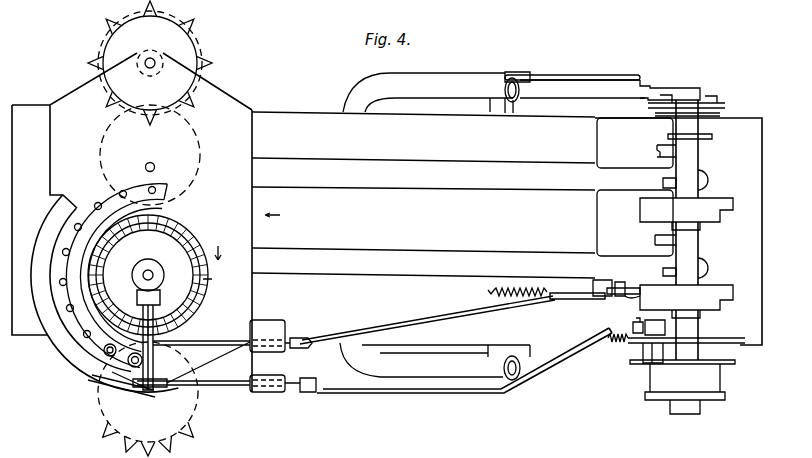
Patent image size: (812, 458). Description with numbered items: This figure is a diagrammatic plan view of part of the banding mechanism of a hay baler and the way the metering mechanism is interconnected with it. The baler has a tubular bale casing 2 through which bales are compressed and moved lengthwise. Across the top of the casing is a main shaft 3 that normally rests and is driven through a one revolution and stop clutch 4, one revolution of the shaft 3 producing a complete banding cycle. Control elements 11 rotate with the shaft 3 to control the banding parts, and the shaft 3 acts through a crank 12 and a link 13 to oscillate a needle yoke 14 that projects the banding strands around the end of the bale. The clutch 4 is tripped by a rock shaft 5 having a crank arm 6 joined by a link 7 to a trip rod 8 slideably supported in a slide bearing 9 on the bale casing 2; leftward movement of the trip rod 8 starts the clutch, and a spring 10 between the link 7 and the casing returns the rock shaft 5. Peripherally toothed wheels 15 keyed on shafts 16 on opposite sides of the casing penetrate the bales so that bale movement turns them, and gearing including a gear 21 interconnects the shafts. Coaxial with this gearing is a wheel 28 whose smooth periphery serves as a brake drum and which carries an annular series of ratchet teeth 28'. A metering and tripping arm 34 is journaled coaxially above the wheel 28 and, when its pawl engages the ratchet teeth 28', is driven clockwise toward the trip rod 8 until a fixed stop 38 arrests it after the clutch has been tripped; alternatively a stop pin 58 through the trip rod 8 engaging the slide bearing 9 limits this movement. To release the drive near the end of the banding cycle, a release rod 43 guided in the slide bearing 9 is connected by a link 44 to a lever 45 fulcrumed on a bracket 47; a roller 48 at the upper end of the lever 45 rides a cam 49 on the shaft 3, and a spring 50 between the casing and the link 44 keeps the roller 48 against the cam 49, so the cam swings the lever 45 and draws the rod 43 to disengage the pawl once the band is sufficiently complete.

The bale casing 2 is at (393, 188).
The main shaft 3 is at (697, 252).
The one revolution and stop clutch 4 is at (655, 378).
The rock shaft 5 is at (640, 350).
The crank arm 6 is at (638, 327).
The link 7 is at (532, 383).
The trip rod 8 is at (220, 386).
The slide bearing 9 is at (290, 330).
The spring 10 is at (618, 343).
The control elements 11 is at (642, 208).
The crank 12 is at (660, 84).
The link 13 is at (578, 76).
The needle yoke 14 is at (462, 80).
The peripherally toothed wheels 15 is at (100, 43).
The shafts 16 is at (162, 58).
The gear 21 is at (110, 142).
The wheel 28 is at (156, 298).
The ratchet teeth 28' is at (219, 267).
The metering and tripping arm 34 is at (170, 432).
The fixed stop 38 is at (103, 388).
The release rod 43 is at (222, 341).
The link 44 is at (410, 327).
The lever 45 is at (607, 291).
The bracket 47 is at (646, 300).
The roller 48 is at (612, 282).
The cam 49 is at (718, 285).
The spring 50 is at (497, 290).
The stop pin 58 is at (290, 380).